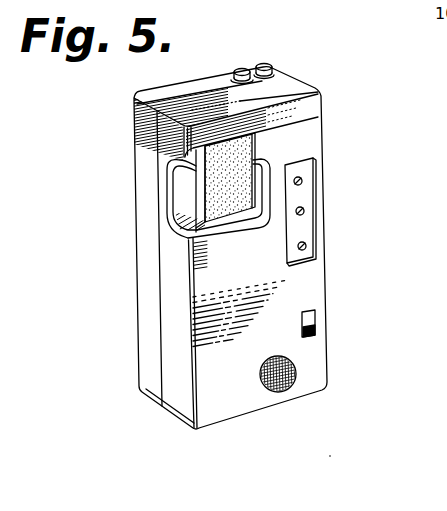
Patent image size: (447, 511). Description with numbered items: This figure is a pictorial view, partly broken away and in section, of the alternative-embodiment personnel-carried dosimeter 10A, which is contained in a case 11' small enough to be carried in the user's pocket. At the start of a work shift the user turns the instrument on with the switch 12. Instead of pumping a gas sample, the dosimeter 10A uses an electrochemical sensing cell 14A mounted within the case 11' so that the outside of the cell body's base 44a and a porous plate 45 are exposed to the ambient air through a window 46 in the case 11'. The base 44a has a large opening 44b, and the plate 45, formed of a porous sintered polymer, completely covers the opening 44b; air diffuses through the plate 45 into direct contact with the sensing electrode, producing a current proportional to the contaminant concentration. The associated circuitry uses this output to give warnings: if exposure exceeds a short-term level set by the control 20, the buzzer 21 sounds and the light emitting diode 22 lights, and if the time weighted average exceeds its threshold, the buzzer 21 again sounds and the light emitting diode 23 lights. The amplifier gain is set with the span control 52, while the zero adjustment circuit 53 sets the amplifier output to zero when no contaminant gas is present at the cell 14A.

The dosimeter 10A is at (130, 307).
The case 11' is at (189, 336).
The switch 12 is at (317, 329).
The electrochemical sensing cell 14A is at (186, 207).
The control 20 is at (306, 246).
The buzzer 21 is at (283, 392).
The light emitting diode 22 is at (272, 64).
The light emitting diode 23 is at (243, 68).
The base 44a is at (231, 221).
The opening 44b is at (176, 232).
The plate 45 is at (200, 147).
The window 46 is at (238, 140).
The control 52 is at (304, 212).
The zero adjustment circuit 53 is at (302, 181).